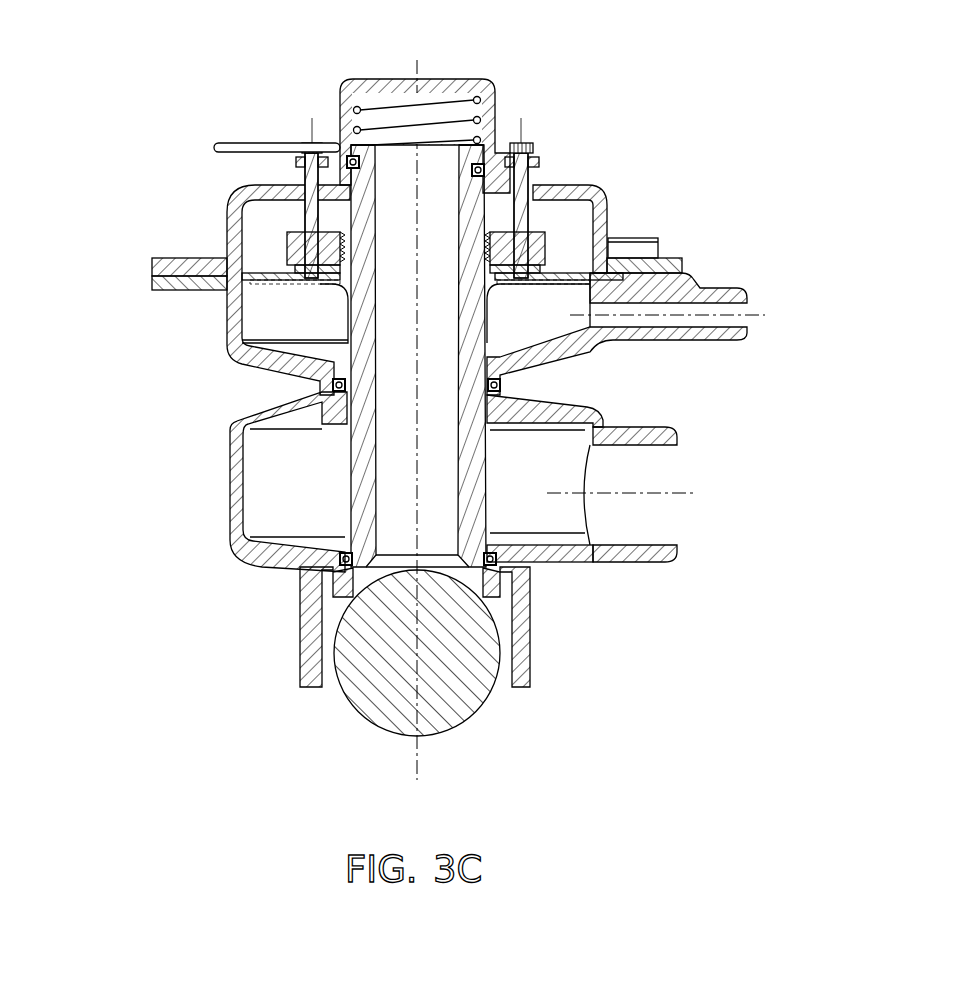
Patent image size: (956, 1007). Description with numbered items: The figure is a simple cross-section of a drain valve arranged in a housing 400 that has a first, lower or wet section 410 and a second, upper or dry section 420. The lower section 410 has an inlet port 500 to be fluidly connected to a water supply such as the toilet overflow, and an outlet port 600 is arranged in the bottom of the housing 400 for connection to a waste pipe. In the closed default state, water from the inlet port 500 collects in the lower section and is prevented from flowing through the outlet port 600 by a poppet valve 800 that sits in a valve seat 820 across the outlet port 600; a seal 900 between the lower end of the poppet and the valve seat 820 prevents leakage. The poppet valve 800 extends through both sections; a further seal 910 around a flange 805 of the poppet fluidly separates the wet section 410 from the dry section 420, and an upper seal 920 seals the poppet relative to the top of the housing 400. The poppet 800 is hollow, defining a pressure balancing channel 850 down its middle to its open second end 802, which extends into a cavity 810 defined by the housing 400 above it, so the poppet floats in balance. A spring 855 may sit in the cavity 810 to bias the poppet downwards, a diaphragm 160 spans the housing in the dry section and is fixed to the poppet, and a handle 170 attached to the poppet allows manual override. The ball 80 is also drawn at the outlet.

The ball 80 is at (373, 698).
The diaphragm 160 is at (560, 272).
The handle 170 is at (240, 147).
The housing 400 is at (223, 218).
The lower section 410 is at (230, 488).
The upper section 420 is at (258, 318).
The inlet port 500 is at (670, 548).
The outlet port 600 is at (533, 690).
The poppet valve 800 is at (393, 520).
The second end 802 is at (460, 153).
The flange 805 is at (500, 412).
The cavity 810 is at (382, 102).
The valve seat 820 is at (483, 585).
The pressure balancing channel 850 is at (440, 237).
The spring 855 is at (350, 98).
The seal 900 is at (340, 567).
The further seal 910 is at (502, 385).
The upper seal 920 is at (482, 167).